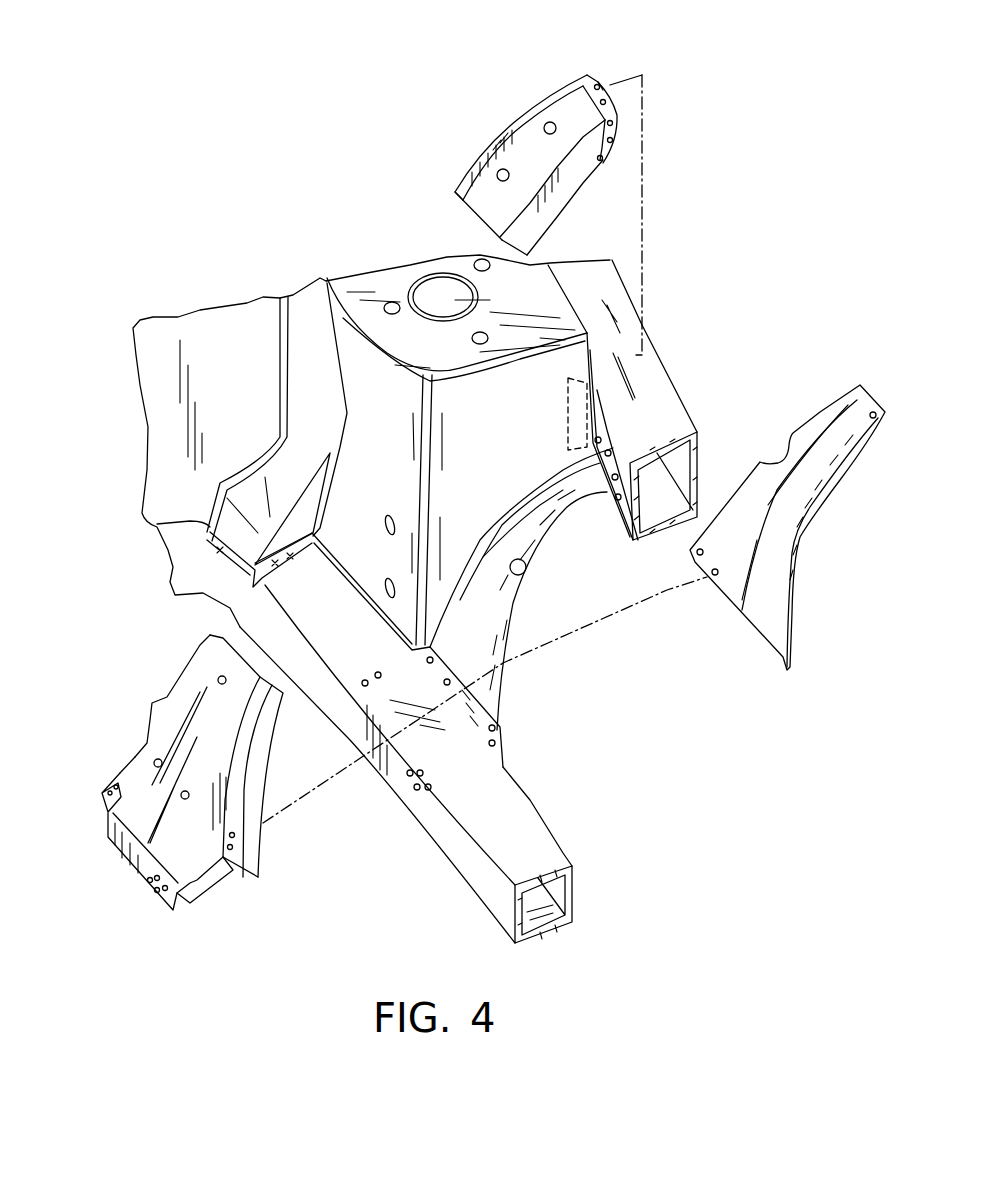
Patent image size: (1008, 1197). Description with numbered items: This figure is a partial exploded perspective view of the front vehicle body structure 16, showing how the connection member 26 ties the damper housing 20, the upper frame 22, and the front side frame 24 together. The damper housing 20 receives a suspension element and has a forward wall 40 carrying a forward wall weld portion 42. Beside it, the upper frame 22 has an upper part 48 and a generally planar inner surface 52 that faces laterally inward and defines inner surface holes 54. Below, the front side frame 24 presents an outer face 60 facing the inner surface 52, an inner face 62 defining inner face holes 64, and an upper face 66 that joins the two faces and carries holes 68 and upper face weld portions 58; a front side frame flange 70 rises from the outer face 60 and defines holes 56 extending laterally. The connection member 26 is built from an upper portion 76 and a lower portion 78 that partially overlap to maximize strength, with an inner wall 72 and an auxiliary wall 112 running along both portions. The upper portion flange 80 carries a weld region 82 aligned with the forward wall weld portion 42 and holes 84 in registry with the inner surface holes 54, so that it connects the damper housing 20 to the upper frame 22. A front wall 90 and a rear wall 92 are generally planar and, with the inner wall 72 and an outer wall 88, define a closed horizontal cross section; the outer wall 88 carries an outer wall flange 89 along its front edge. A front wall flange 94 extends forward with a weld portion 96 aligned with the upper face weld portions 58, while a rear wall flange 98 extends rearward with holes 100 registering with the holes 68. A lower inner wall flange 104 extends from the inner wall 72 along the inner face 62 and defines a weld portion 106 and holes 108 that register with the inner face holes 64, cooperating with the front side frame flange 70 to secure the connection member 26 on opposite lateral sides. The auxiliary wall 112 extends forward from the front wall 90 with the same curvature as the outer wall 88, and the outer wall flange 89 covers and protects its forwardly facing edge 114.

The front vehicle body structure 16 is at (705, 882).
The damper housing 20 is at (392, 278).
The upper frame 22 is at (627, 300).
The front side frame 24 is at (277, 595).
The connection member 26 is at (182, 801).
The forward wall 40 is at (530, 403).
The forward wall weld portion 42 is at (497, 503).
The upper part 48 is at (678, 413).
The inner surface 52 is at (610, 428).
The inner surface holes 54 is at (622, 445).
The holes 56 is at (500, 740).
The upper face weld portions 58 is at (480, 777).
The outer face 60 is at (573, 883).
The inner face 62 is at (487, 883).
The inner face holes 64 is at (417, 787).
The upper face 66 is at (530, 853).
The holes 68 is at (378, 675).
The front side frame flange 70 is at (477, 697).
The inner wall 72 is at (517, 157).
The upper portion 76 is at (502, 132).
The lower portion 78 is at (140, 752).
The upper portion flange 80 is at (592, 78).
The weld region 82 is at (520, 110).
The holes 84 is at (613, 97).
The outer wall 88 is at (773, 540).
The outer wall flange 89 is at (808, 508).
The front wall 90 is at (570, 167).
The rear wall 92 is at (178, 695).
The front wall flange 94 is at (210, 877).
The weld portion 96 is at (225, 872).
The rear wall flange 98 is at (123, 783).
The holes 100 is at (115, 785).
The lower inner wall flange 104 is at (138, 860).
The weld portion 106 is at (117, 840).
The holes 108 is at (167, 897).
The auxiliary wall 112 is at (552, 213).
The forwardly facing edge 114 is at (573, 198).